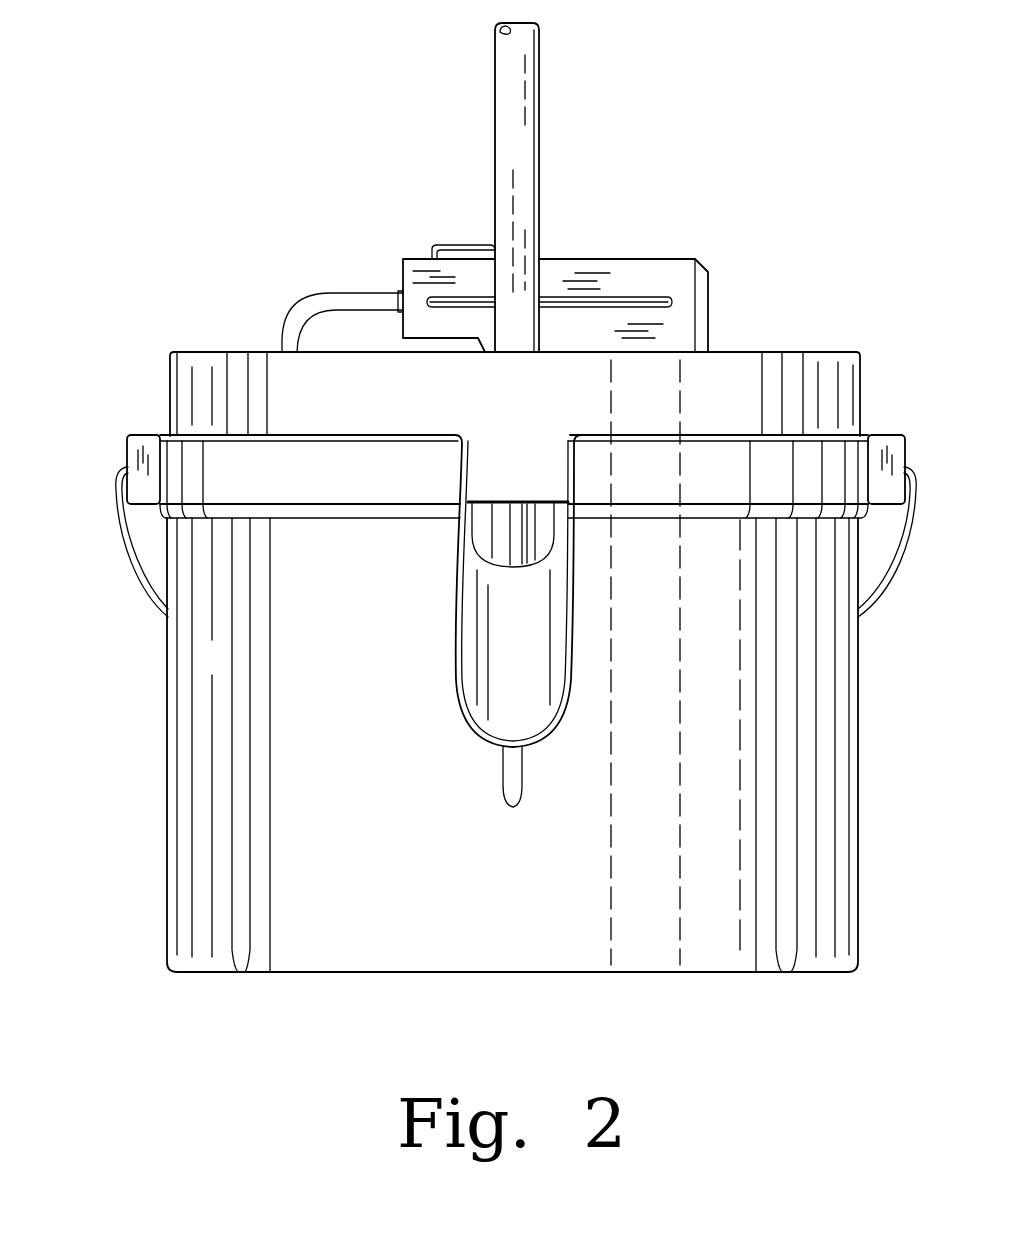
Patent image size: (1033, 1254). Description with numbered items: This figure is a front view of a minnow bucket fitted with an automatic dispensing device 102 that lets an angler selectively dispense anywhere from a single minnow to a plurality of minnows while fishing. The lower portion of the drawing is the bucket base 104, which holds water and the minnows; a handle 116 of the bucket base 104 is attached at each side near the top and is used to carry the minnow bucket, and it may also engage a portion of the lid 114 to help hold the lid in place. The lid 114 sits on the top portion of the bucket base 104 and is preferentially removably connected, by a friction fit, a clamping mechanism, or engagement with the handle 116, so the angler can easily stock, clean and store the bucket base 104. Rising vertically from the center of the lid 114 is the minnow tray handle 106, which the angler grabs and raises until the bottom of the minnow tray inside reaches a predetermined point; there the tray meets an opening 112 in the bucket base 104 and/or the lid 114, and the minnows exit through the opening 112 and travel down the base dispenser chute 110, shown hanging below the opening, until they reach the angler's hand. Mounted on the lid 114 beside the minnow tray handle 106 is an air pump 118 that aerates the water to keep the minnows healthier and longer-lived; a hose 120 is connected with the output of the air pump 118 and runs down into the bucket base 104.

The automatic dispensing device 102 is at (556, 201).
The bucket base 104 is at (167, 872).
The minnow tray handle 106 is at (505, 98).
The base dispenser chute 110 is at (455, 677).
The opening 112 is at (480, 525).
The lid 114 is at (745, 350).
The handle 116 is at (119, 508).
The air pump 118 is at (668, 258).
The hose 120 is at (340, 296).